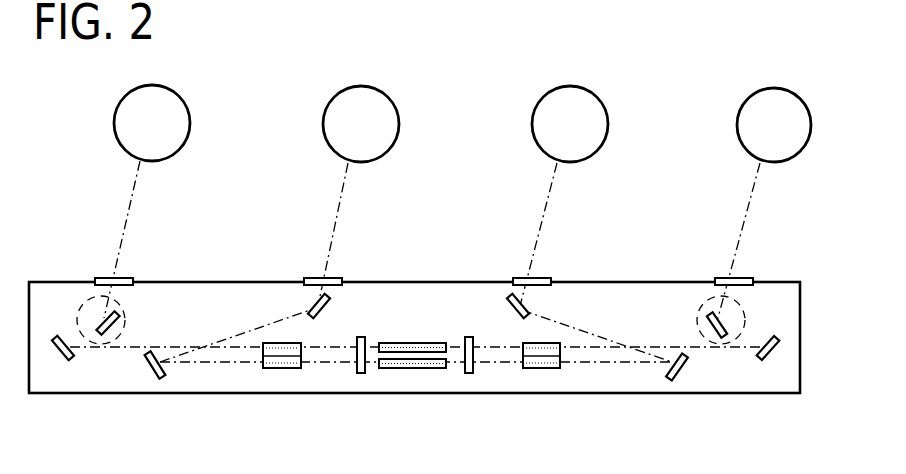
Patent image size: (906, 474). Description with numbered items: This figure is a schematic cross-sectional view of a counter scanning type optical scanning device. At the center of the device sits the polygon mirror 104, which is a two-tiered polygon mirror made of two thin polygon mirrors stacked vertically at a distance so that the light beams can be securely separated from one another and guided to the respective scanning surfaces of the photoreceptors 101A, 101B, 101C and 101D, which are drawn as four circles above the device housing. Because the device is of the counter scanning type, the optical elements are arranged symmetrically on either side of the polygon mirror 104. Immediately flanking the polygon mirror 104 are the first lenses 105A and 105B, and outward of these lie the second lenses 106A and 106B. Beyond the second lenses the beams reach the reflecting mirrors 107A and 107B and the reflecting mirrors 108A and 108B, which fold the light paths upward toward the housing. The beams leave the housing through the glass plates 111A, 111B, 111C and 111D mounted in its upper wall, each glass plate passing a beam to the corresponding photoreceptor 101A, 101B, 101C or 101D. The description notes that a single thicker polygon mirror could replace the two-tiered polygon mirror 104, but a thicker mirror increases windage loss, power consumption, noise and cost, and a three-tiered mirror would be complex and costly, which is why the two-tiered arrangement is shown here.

The photoreceptor 101A is at (170, 103).
The photoreceptor 101B is at (380, 103).
The photoreceptor 101C is at (589, 103).
The photoreceptor 101D is at (793, 103).
The glass plate 111A is at (106, 278).
The glass plate 111B is at (315, 278).
The glass plate 111C is at (523, 278).
The glass plate 111D is at (728, 278).
The reflecting mirror 108A is at (66, 352).
The reflecting mirror 108B is at (771, 353).
The reflecting mirror 107A is at (152, 369).
The reflecting mirror 107B is at (684, 370).
The second lens 106A is at (273, 369).
The second lens 106B is at (553, 369).
The first lens 105A is at (356, 374).
The first lens 105B is at (474, 374).
The polygon mirror 104 is at (415, 369).